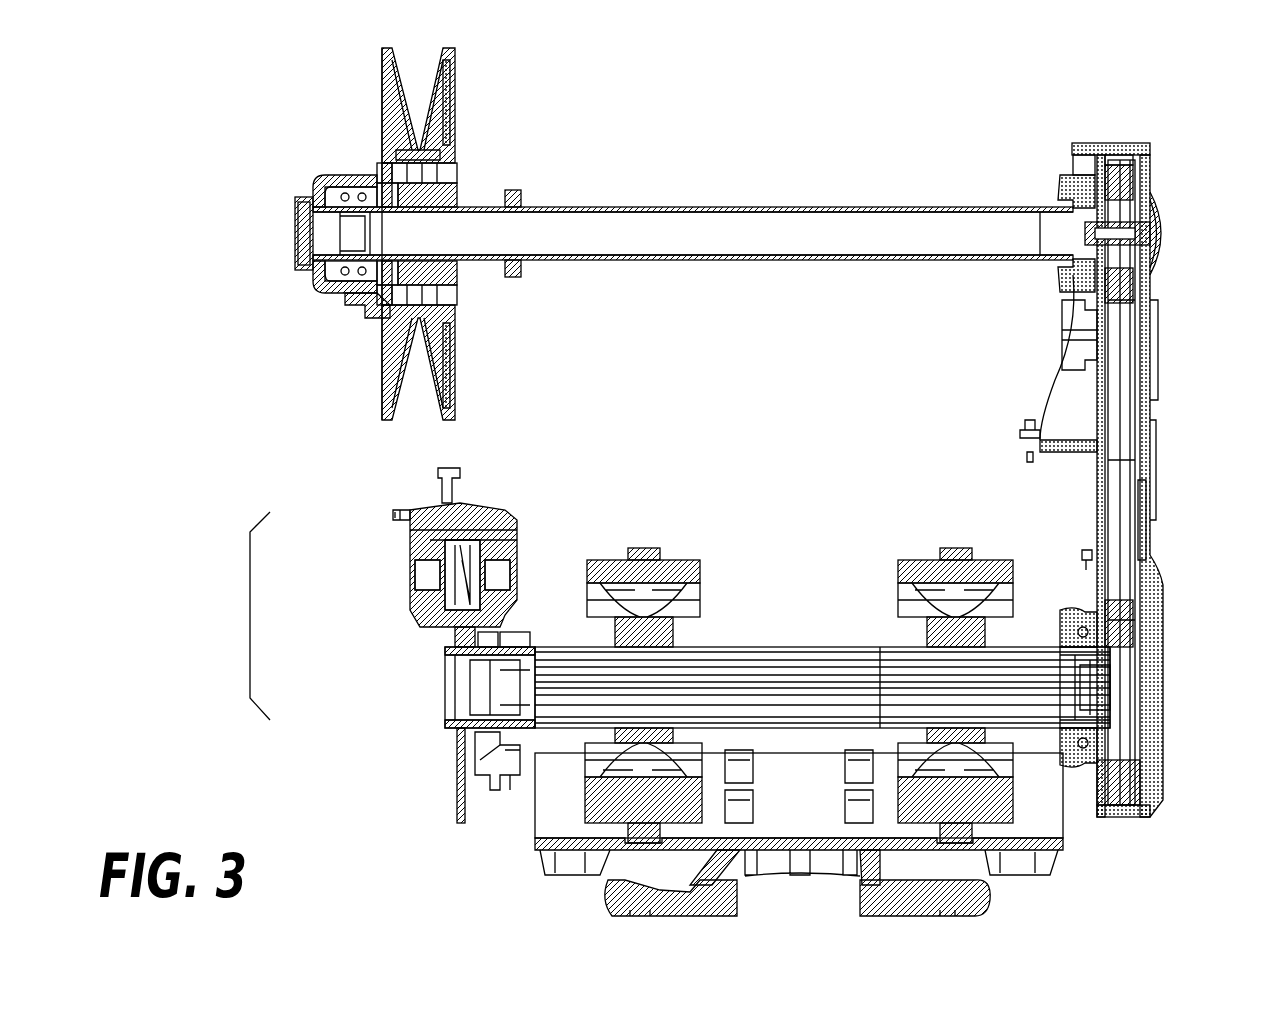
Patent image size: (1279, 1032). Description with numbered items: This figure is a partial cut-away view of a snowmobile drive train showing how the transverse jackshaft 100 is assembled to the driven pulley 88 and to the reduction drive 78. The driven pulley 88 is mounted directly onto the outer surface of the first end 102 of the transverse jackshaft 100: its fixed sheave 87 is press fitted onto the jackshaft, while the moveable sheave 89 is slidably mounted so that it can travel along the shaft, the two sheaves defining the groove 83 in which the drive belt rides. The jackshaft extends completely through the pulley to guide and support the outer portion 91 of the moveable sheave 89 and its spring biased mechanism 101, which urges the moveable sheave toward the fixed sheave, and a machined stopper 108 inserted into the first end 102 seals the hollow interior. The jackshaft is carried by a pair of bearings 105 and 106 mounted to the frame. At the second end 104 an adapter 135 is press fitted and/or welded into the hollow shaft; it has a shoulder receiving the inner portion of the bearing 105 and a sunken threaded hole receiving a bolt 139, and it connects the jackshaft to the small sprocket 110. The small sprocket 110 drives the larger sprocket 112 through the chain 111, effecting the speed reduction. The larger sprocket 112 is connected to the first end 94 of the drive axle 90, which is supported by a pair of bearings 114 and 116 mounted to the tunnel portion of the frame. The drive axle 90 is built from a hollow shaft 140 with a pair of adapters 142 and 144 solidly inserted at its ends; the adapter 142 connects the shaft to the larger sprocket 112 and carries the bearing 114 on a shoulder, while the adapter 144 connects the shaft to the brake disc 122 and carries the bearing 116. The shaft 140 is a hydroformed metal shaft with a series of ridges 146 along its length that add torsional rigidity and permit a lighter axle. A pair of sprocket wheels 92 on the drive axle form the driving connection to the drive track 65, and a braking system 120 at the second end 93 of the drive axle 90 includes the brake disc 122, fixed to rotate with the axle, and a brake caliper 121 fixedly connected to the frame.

The drive track 65 is at (535, 840).
The reduction drive 78 is at (1185, 437).
The groove 83 is at (412, 110).
The fixed sheave 87 is at (385, 56).
The driven pulley 88 is at (315, 115).
The moveable sheave 89 is at (458, 62).
The drive axle 90 is at (790, 640).
The outer portion of the moveable sheave 91 is at (330, 175).
The sprocket wheels 92 is at (660, 548).
The second end of the drive axle 93 is at (550, 640).
The first end of the drive axle 94 is at (1025, 645).
The transverse jackshaft 100 is at (770, 200).
The spring biased mechanism 101 is at (352, 283).
The first end of the transverse jackshaft 102 is at (693, 233).
The second end of the transverse jackshaft 104 is at (996, 233).
The bearing 105 is at (1060, 175).
The bearing 106 is at (515, 278).
The machined stopper 108 is at (296, 230).
The small sprocket 110 is at (1125, 178).
The chain 111 is at (1130, 365).
The larger sprocket 112 is at (1135, 750).
The bearing 114 is at (1065, 620).
The bearing 116 is at (515, 575).
The braking system 120 is at (250, 618).
The brake caliper 121 is at (410, 548).
The brake disc 122 is at (455, 752).
The adapter 135 is at (1044, 248).
The bolt 139 is at (1160, 225).
The hollow shaft 140 is at (870, 645).
The adapter 142 is at (1070, 745).
The adapter 144 is at (528, 765).
The ridges 146 is at (757, 705).